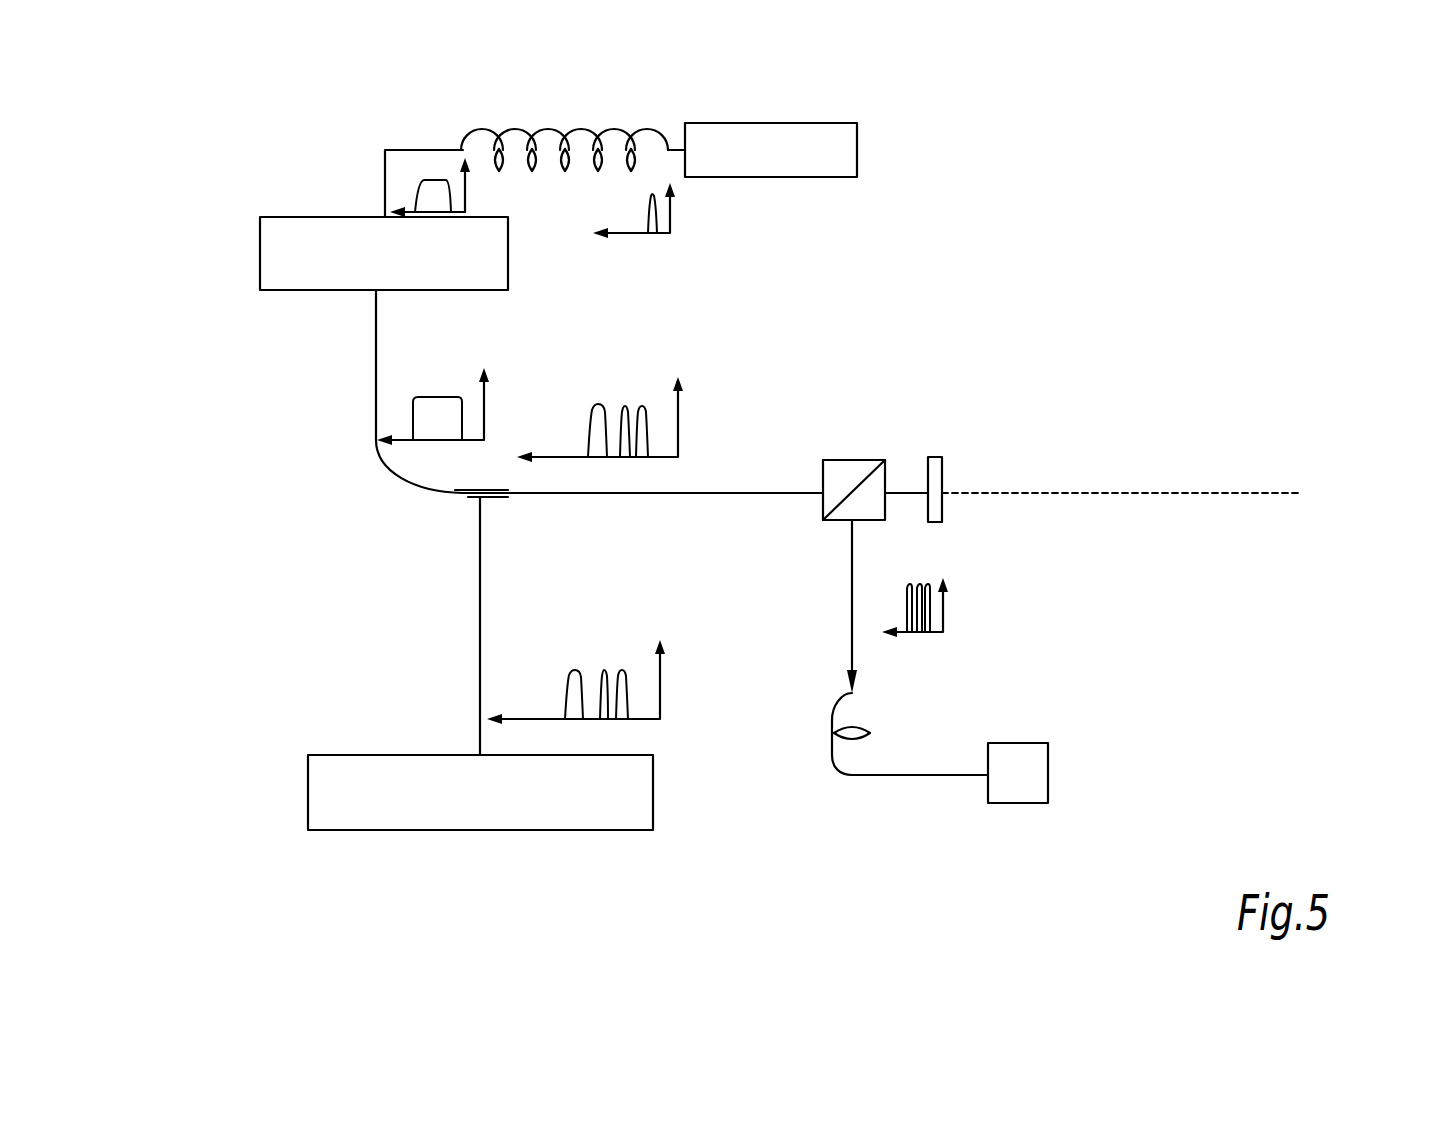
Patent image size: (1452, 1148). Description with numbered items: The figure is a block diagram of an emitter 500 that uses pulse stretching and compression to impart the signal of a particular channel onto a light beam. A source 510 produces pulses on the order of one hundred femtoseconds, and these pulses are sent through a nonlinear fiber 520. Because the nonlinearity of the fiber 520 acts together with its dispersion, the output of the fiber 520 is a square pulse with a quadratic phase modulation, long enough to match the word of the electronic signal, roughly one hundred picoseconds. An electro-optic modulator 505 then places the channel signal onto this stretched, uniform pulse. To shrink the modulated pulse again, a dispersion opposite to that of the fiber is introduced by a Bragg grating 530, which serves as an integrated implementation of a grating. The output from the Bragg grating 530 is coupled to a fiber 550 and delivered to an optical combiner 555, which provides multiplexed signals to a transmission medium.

The emitter 500 is at (208, 97).
The electro-optic modulator 505 is at (462, 497).
The source 510 is at (773, 123).
The nonlinear fiber 520 is at (585, 127).
The Bragg grating 530 is at (822, 471).
The fiber 550 is at (830, 708).
The optical combiner 555 is at (1018, 808).